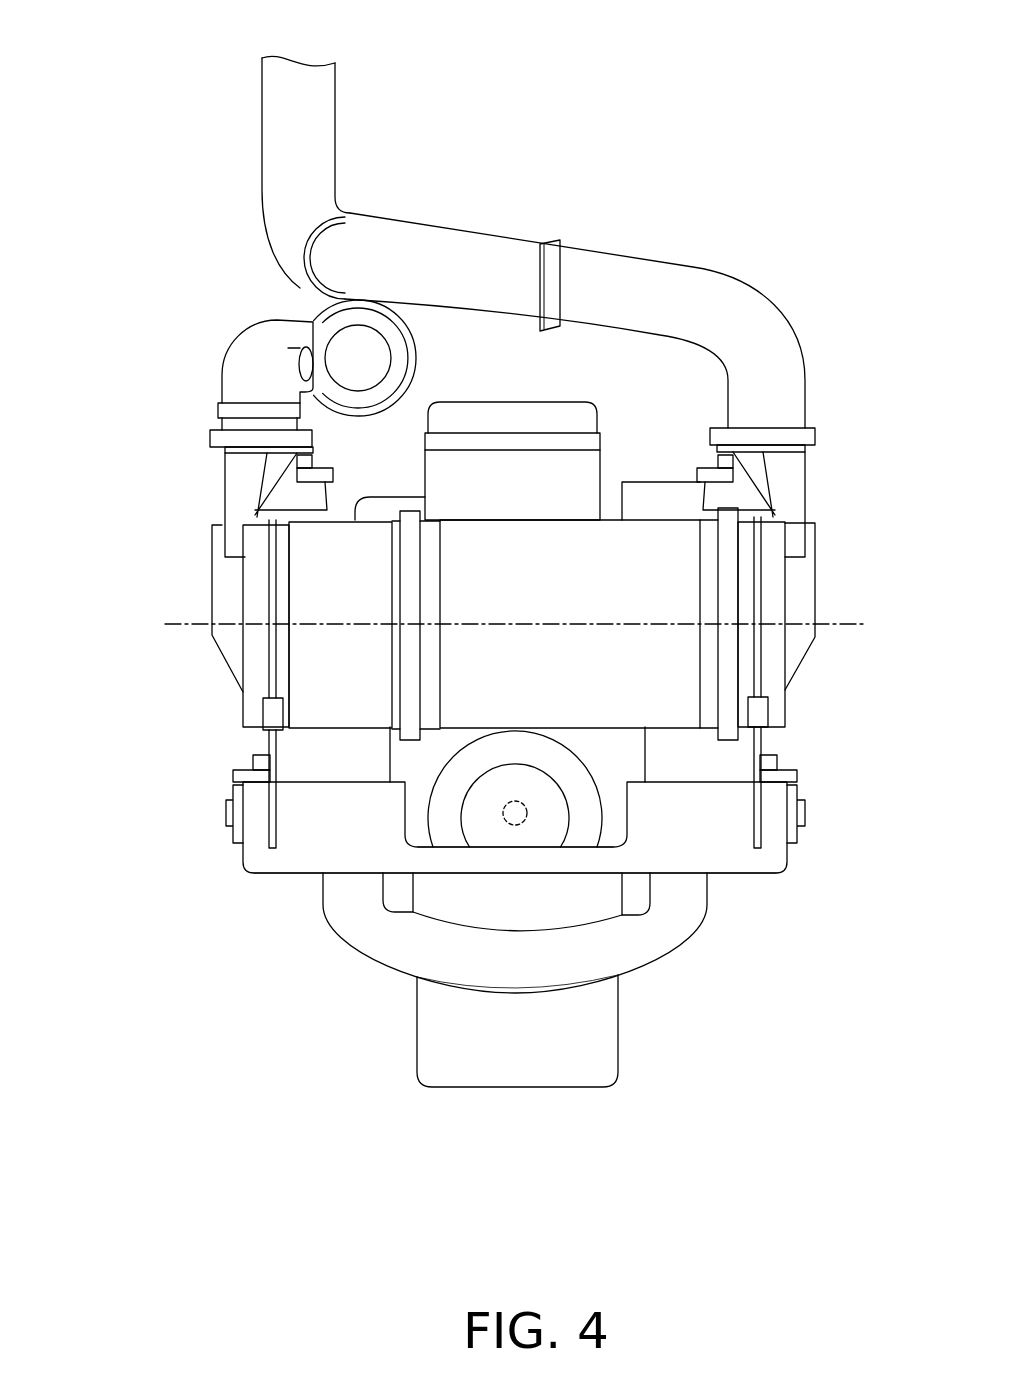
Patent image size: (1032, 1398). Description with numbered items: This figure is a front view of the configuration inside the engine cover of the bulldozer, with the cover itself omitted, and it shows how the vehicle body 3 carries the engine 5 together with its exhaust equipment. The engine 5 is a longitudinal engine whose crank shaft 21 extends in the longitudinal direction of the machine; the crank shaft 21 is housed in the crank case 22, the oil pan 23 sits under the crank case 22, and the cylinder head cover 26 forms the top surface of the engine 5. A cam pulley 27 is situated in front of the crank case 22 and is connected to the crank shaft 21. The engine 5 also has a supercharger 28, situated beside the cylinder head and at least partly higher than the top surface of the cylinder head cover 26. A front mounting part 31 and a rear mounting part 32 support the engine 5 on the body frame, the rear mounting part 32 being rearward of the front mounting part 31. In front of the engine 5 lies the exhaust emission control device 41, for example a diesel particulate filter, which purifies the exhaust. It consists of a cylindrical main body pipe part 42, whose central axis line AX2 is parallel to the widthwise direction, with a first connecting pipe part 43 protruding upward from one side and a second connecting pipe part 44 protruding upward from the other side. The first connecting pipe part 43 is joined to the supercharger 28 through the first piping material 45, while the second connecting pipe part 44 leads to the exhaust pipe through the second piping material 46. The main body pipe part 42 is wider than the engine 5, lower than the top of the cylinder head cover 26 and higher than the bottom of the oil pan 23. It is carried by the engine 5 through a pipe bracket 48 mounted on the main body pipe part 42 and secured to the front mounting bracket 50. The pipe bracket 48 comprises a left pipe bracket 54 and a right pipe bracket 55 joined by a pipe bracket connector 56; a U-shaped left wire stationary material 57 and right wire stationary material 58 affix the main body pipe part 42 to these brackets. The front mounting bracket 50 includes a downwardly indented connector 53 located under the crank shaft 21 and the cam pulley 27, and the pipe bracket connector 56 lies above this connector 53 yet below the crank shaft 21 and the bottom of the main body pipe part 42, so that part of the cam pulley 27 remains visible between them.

The vehicle body 3 is at (632, 96).
The engine 5 is at (593, 386).
The crank shaft 21 is at (533, 803).
The crank case 22 is at (607, 827).
The oil pan 23 is at (577, 1065).
The cylinder head cover 26 is at (528, 418).
The cam pulley 27 is at (465, 790).
The supercharger 28 is at (300, 303).
The front mounting part 31 is at (215, 822).
The rear mounting part 32 is at (297, 500).
The exhaust emission control device 41 is at (211, 552).
The main body pipe part 42 is at (326, 588).
The first connecting pipe part 43 is at (237, 474).
The second connecting pipe part 44 is at (773, 463).
The first piping material 45 is at (257, 358).
The second piping material 46 is at (687, 290).
The pipe bracket 48 is at (293, 885).
The front mounting bracket 50 is at (655, 978).
The connector 53 is at (493, 970).
The left pipe bracket 54 is at (757, 855).
The right pipe bracket 55 is at (273, 868).
The pipe bracket connector 56 is at (468, 855).
The left wire stationary material 57 is at (763, 668).
The right wire stationary material 58 is at (262, 652).
The central axis line of the main body pipe part AX2 is at (838, 622).